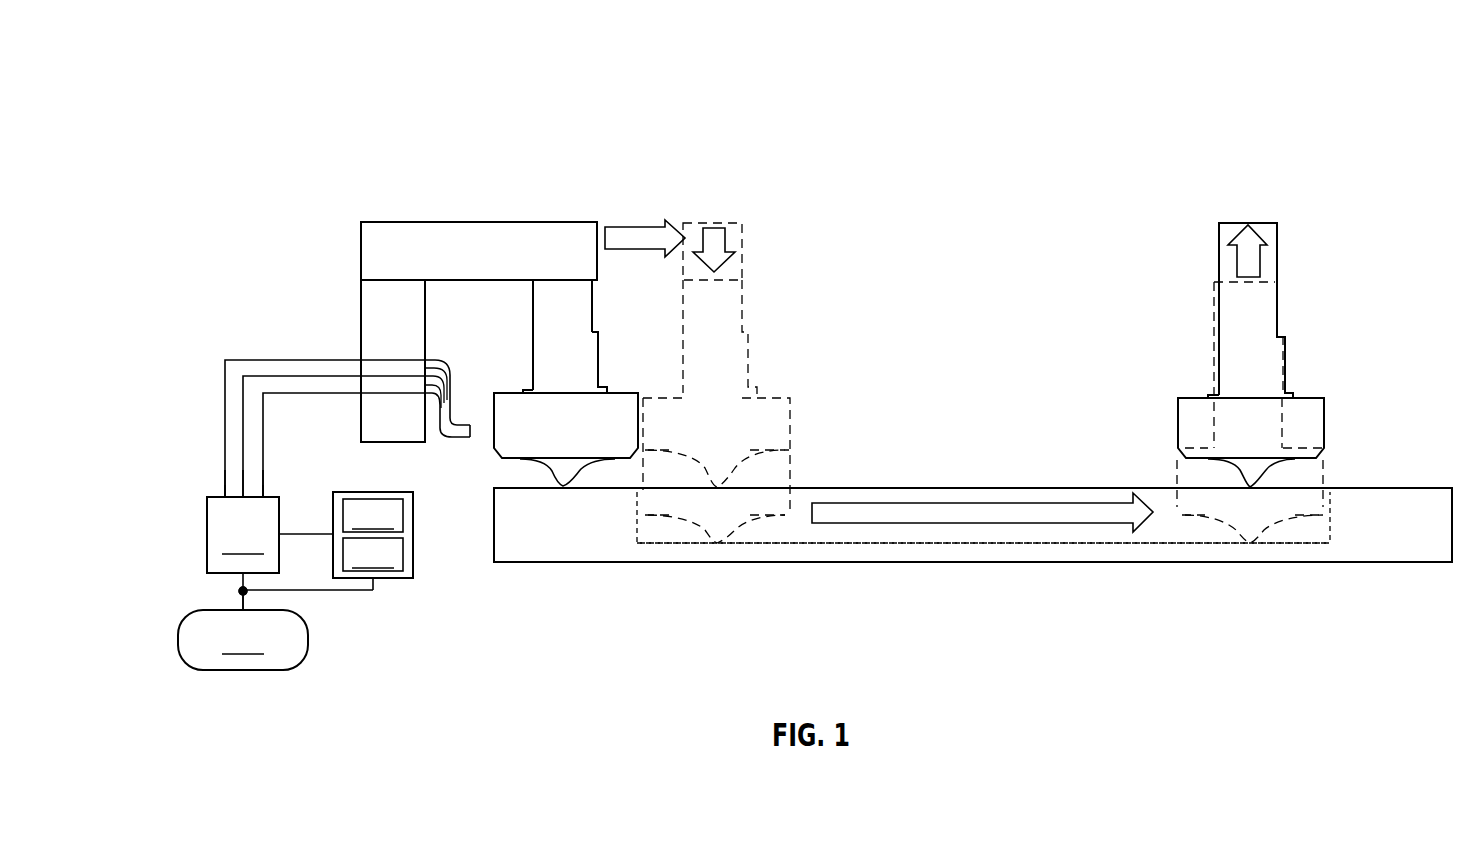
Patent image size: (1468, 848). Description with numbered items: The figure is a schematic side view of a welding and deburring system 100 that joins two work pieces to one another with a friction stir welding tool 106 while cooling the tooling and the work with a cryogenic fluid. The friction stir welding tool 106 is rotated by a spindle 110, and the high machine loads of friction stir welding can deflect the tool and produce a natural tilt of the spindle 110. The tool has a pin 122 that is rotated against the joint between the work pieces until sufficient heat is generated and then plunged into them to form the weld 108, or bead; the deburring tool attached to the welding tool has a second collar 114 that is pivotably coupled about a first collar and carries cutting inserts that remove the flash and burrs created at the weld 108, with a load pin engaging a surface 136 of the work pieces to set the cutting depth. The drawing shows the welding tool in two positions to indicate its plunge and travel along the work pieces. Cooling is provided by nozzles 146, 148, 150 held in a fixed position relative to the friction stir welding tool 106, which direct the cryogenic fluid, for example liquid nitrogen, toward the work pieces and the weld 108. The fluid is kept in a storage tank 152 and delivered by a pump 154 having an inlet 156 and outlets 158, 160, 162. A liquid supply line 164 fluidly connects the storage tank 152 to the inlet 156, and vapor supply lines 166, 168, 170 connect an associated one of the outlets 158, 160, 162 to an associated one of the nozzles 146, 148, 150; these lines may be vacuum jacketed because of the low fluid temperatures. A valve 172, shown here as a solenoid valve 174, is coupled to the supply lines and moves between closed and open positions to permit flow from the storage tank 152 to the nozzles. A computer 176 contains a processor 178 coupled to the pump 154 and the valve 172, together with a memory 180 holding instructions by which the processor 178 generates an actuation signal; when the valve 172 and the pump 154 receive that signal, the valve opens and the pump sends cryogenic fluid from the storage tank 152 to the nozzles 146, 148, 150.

The welding and deburring system 100 is at (226, 268).
The friction stir welding tool 106 is at (606, 349).
The weld 108 is at (940, 543).
The spindle 110 is at (592, 307).
The second collar 114 is at (498, 458).
The pin 122 is at (563, 487).
The surface 136 is at (1370, 488).
The nozzle 146 is at (437, 358).
The nozzle 148 is at (443, 377).
The nozzle 150 is at (448, 427).
The storage tank 152 is at (243, 640).
The pump 154 is at (270, 535).
The inlet 156 is at (245, 578).
The outlet 158 is at (223, 497).
The outlet 160 is at (227, 493).
The outlet 162 is at (262, 496).
The liquid supply line 164 is at (238, 602).
The vapor supply line 166 is at (225, 373).
The vapor supply line 168 is at (243, 423).
The vapor supply line 170 is at (263, 440).
The valve 172 is at (238, 590).
The solenoid valve 174 is at (243, 591).
The computer 176 is at (403, 588).
The processor 178 is at (373, 515).
The memory 180 is at (373, 554).